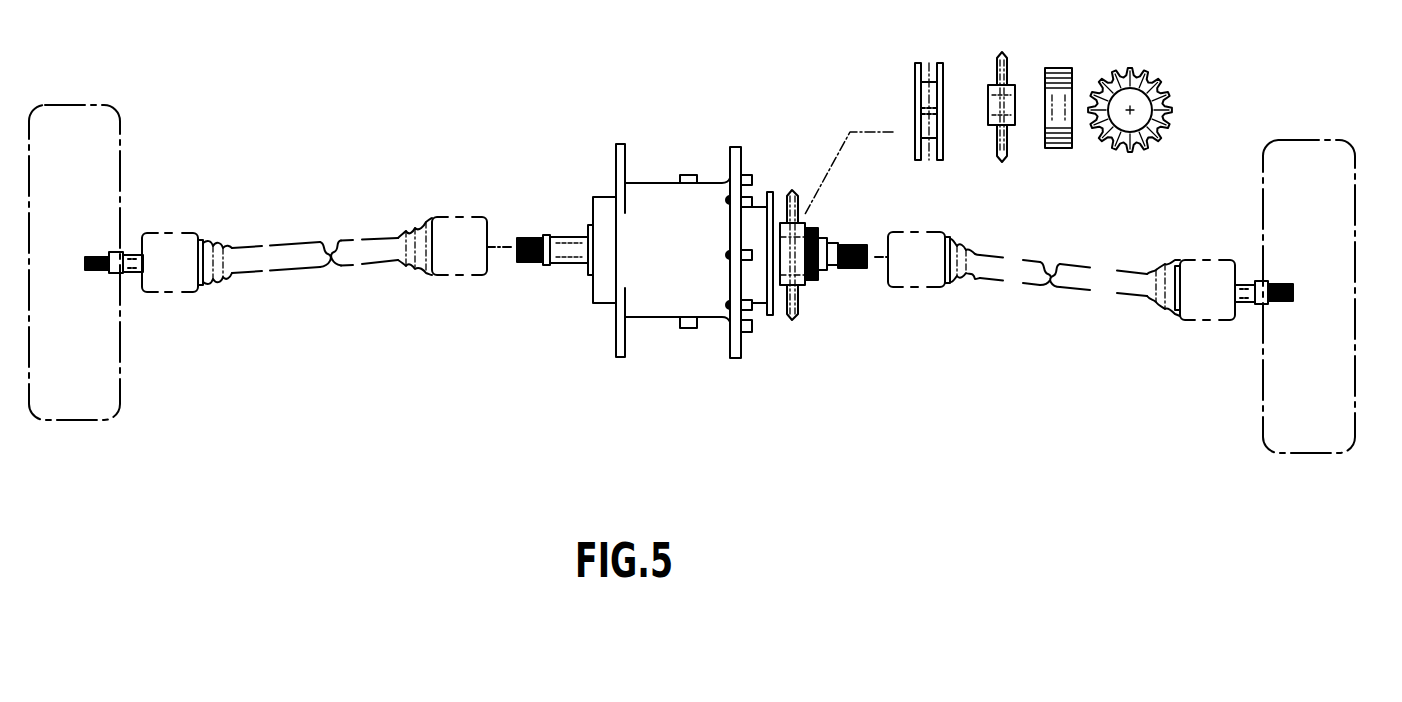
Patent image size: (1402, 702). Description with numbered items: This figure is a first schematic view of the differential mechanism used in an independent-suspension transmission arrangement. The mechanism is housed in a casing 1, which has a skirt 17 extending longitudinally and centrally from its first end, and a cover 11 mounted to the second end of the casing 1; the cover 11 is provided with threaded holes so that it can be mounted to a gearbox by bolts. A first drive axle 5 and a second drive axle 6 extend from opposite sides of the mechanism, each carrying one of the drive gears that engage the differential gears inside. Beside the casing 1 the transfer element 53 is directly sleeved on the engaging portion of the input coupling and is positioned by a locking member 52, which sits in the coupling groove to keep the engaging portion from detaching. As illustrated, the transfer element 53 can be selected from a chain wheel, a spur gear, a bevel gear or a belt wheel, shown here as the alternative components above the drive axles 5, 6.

The casing 1 is at (703, 195).
The first drive axle 5 is at (853, 243).
The second drive axle 6 is at (573, 243).
The cover 11 is at (759, 208).
The skirt 17 is at (603, 203).
The locking member 52 is at (808, 290).
The transfer element 53 is at (791, 190).